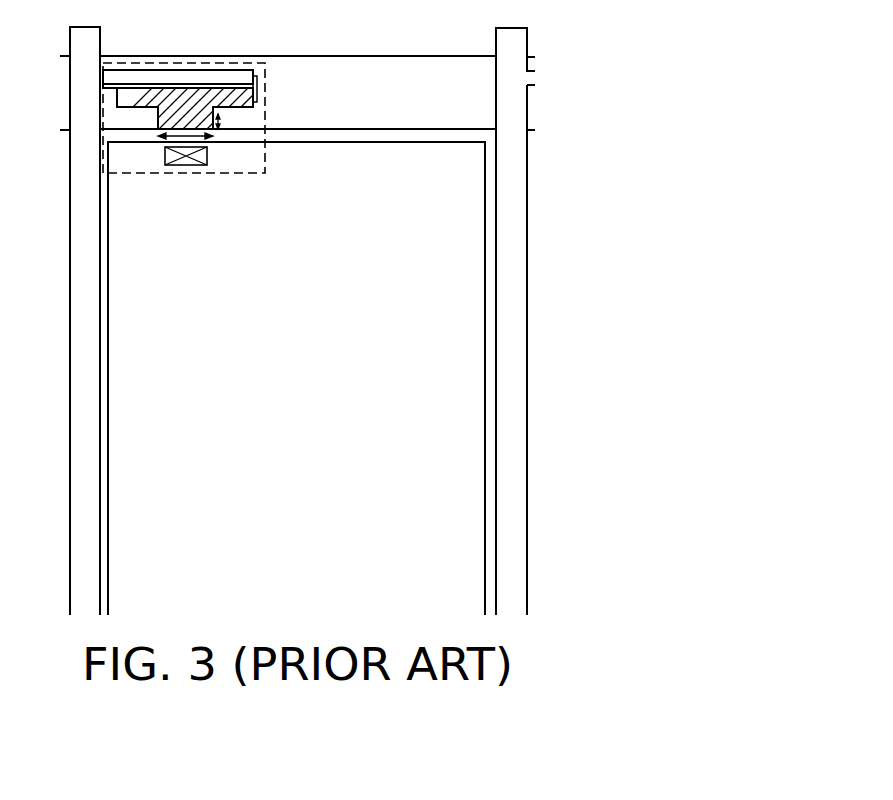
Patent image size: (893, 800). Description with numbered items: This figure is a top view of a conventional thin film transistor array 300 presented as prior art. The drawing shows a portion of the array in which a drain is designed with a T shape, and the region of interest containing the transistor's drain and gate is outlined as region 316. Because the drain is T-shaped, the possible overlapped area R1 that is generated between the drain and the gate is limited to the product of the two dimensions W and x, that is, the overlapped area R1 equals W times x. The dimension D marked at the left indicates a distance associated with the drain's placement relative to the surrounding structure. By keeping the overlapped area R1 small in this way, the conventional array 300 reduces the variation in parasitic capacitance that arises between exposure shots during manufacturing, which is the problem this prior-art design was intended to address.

The pixel structure 300 is at (321, 326).
The storage capacitor region 316 is at (243, 63).
The distance D is at (158, 126).
The width of overlapped area W is at (186, 134).
The height of overlapped area x is at (225, 122).
The overlapped area R1 is at (187, 114).